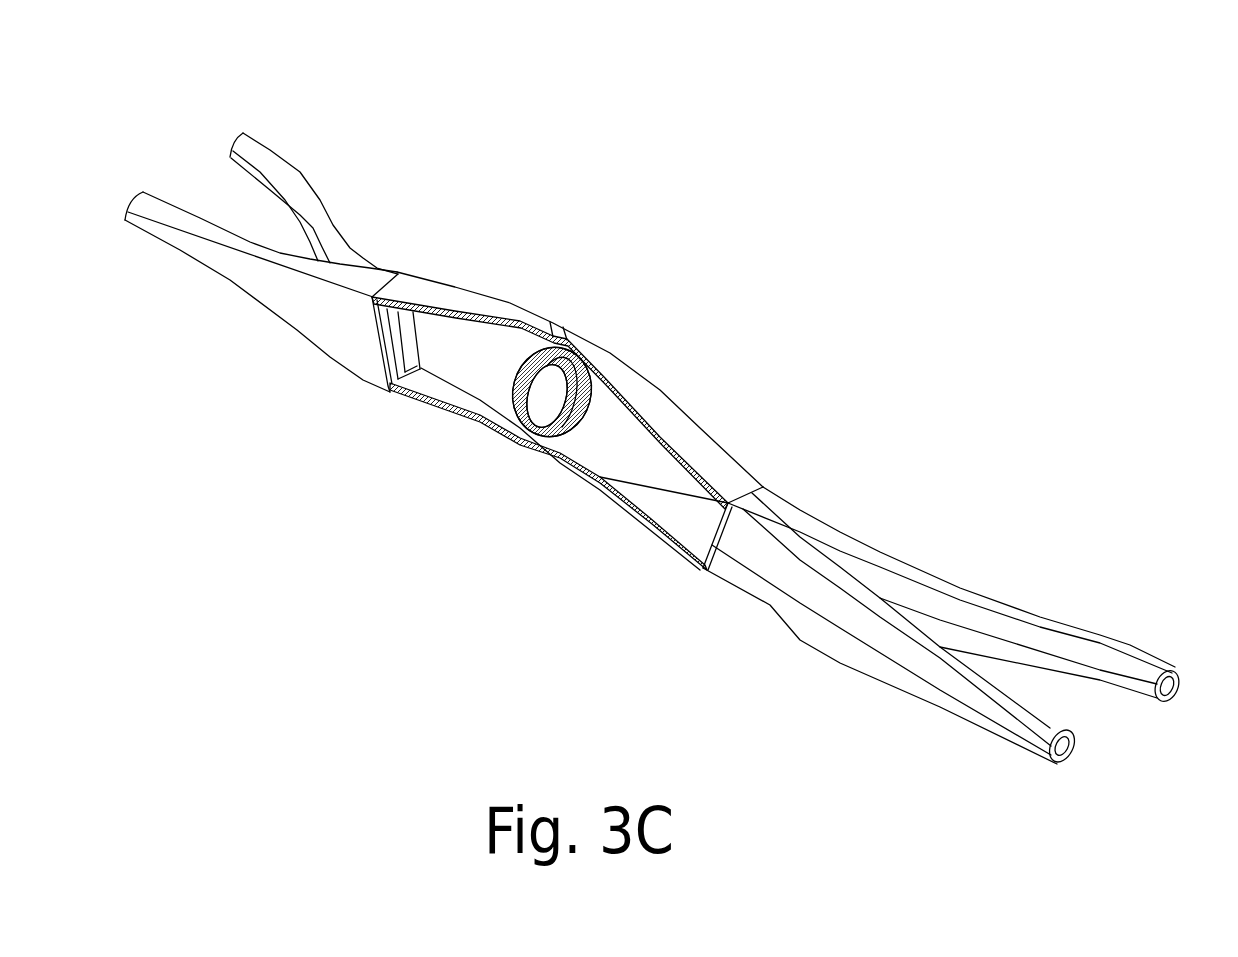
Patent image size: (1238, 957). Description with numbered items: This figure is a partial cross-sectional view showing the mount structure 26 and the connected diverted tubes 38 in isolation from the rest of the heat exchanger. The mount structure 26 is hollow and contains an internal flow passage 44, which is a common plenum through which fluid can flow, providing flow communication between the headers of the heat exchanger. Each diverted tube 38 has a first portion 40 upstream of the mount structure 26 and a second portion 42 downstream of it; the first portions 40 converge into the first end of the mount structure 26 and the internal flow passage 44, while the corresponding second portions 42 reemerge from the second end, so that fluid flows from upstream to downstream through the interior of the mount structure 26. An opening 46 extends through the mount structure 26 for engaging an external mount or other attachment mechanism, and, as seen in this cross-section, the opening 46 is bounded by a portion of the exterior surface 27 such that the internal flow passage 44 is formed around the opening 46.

The mount structure 26 is at (677, 428).
The exterior surface 27 is at (393, 268).
The diverted tubes 38 is at (302, 208).
The first portions 40 is at (223, 272).
The second portions 42 is at (1003, 627).
The internal flow passage 44 is at (440, 385).
The opening 46 is at (555, 382).